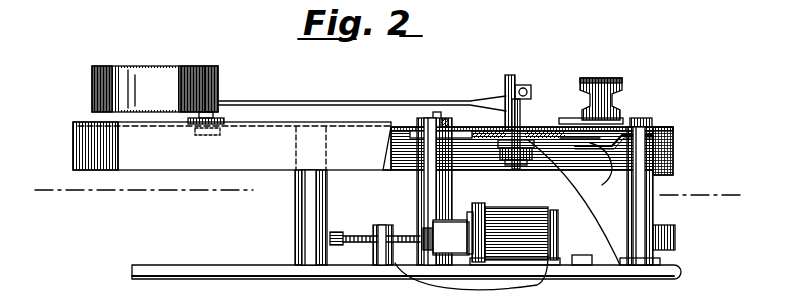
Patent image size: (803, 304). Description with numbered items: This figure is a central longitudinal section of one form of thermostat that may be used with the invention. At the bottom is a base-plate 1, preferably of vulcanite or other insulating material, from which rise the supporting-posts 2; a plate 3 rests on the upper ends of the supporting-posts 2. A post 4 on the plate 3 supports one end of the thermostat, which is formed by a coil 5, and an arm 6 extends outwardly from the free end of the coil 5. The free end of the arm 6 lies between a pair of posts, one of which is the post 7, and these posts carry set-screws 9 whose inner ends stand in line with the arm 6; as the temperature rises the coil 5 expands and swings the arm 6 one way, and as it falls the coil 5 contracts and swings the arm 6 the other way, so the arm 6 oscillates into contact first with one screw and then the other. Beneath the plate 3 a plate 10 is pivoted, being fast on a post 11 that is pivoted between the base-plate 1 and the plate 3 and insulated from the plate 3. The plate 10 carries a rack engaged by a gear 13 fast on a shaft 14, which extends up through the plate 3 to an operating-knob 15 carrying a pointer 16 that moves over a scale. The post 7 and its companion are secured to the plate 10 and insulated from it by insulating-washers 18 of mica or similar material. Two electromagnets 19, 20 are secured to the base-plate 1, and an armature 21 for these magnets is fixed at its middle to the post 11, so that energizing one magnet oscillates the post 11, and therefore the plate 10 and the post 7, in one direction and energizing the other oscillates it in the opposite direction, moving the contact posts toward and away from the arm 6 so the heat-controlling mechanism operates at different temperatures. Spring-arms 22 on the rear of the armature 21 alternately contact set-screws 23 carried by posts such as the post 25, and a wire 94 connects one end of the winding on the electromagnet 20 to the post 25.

The base-plate 1 is at (180, 268).
The supporting-posts 2 is at (297, 206).
The plate 3 is at (381, 171).
The post 4 is at (211, 70).
The coil 5 is at (150, 72).
The arm 6 is at (268, 104).
The post 7 is at (505, 86).
The set-screws 9 is at (515, 92).
The plate 10 is at (583, 139).
The post 11 is at (420, 196).
The gear 13 is at (594, 150).
The shaft 14 is at (604, 173).
The operating-knob 15 is at (622, 100).
The pointer 16 is at (570, 118).
The insulating-washers 18 is at (527, 132).
The electromagnet 19 is at (478, 210).
The electromagnet 20 is at (516, 210).
The armature 21 is at (451, 237).
The spring-arms 22 is at (424, 236).
The set-screws 23 is at (362, 228).
The post 25 is at (374, 253).
The wire 94 is at (532, 286).